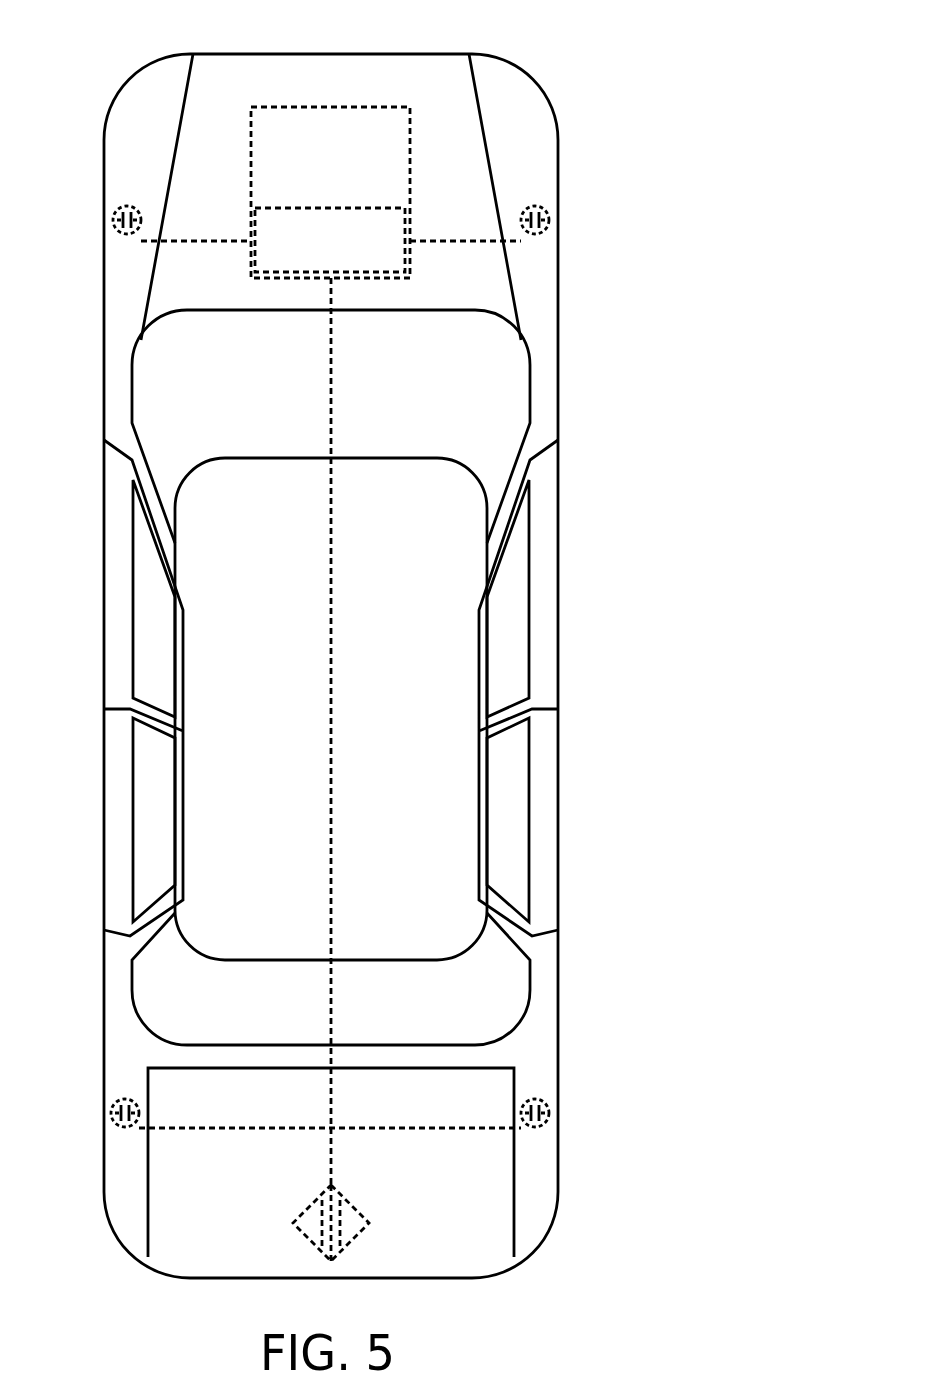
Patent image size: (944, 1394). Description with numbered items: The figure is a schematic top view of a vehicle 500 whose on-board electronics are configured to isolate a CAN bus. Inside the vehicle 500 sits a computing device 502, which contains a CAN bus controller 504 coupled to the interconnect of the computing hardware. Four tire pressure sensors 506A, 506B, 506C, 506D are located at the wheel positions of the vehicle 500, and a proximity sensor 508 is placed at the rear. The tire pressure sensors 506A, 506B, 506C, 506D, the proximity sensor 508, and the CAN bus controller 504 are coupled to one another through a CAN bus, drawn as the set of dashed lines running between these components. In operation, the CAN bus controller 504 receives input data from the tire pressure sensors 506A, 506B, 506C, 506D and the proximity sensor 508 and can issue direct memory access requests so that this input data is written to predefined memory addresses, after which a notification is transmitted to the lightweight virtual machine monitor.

The vehicle 500 is at (583, 121).
The computing device 502 is at (365, 108).
The CAN bus controller 504 is at (344, 197).
The tire pressure sensor 506A is at (115, 212).
The tire pressure sensor 506B is at (548, 210).
The tire pressure sensor 506C is at (110, 1106).
The tire pressure sensor 506D is at (548, 1105).
The proximity sensor 508 is at (353, 1208).